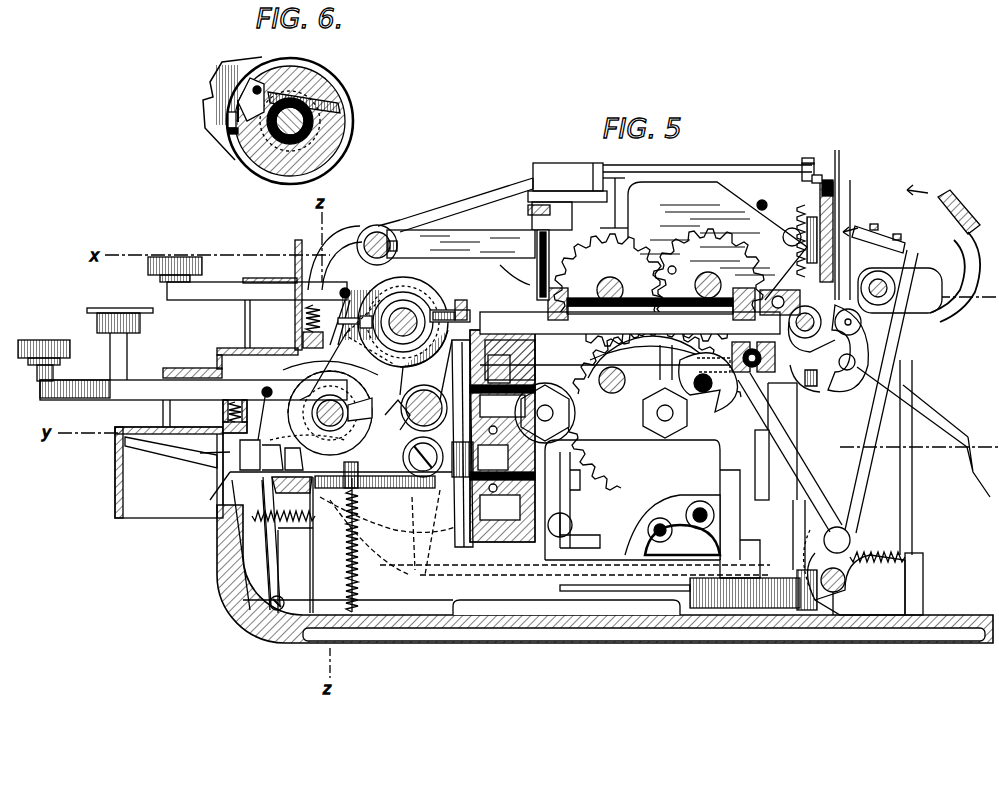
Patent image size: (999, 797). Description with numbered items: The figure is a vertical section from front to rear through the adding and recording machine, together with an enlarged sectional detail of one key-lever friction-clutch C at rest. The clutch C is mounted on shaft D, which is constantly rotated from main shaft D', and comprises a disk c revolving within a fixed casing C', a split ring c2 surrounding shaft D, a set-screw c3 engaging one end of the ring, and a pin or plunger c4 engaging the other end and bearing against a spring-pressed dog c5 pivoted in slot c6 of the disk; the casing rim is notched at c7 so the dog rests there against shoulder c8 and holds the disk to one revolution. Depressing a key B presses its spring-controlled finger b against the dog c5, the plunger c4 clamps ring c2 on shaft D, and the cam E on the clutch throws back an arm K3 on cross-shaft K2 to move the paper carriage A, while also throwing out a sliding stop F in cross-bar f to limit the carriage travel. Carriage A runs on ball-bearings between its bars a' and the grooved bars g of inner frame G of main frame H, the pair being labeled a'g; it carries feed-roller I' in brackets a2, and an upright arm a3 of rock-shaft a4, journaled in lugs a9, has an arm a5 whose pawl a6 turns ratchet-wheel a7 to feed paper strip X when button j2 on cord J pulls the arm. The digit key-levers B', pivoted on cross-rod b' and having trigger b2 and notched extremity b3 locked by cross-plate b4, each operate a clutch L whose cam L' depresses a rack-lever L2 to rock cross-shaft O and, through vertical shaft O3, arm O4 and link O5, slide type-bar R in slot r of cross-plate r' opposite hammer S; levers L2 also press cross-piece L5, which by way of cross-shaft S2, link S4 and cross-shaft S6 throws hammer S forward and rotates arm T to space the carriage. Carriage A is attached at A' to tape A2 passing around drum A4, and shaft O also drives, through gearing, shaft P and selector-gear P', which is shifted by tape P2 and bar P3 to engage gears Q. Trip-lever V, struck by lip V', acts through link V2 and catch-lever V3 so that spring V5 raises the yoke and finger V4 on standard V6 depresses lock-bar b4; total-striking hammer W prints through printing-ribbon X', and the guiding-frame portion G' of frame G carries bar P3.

In FIG. 6, the friction-clutch C is at (295, 117).
In FIG. 5, the friction-clutch C is at (410, 320).
In FIG. 6, the fixed casing C' is at (298, 119).
In FIG. 5, the fixed casing C' is at (405, 315).
In FIG. 5, the ring or disk c is at (408, 300).
In FIG. 6, the split ring c2 is at (318, 124).
In FIG. 6, the set-screw c3 is at (342, 104).
In FIG. 6, the pin or plunger c4 is at (268, 80).
In FIG. 6, the spring-pressed pawl or dog c5 is at (224, 116).
In FIG. 5, the spring-pressed pawl or dog c5 is at (323, 384).
In FIG. 6, the slot c6 is at (258, 76).
In FIG. 6, the notch or recess c7 is at (222, 128).
In FIG. 6, the shoulder c8 is at (228, 132).
In FIG. 6, the shaft D is at (264, 139).
In FIG. 5, the shaft D is at (401, 317).
In FIG. 5, the main shaft D' is at (330, 413).
In FIG. 5, the key B is at (175, 259).
In FIG. 5, the key-lever B' is at (44, 349).
In FIG. 5, the spring-controlled finger b is at (355, 325).
In FIG. 5, the cross-rod b' is at (262, 401).
In FIG. 5, the trigger or finger b2 is at (246, 455).
In FIG. 5, the notched extremity b3 is at (241, 542).
In FIG. 5, the pivoted cross-plate b4 is at (270, 457).
In FIG. 5, the friction-clutch member L is at (330, 384).
In FIG. 5, the cam L' is at (360, 411).
In FIG. 5, the rack-lever L2 is at (409, 457).
In FIG. 5, the cross-piece L5 is at (270, 490).
In FIG. 5, the cam E is at (347, 350).
In FIG. 5, the cross-shaft K2 is at (396, 414).
In FIG. 5, the upright arm K3 is at (398, 382).
In FIG. 5, the trip-lever V is at (424, 405).
In FIG. 5, the projecting lip V' is at (440, 370).
In FIG. 5, the link V2 is at (292, 545).
In FIG. 5, the pivoted lever V3 is at (261, 545).
In FIG. 5, the trip or finger V4 is at (292, 458).
In FIG. 5, the spring V5 is at (283, 510).
In FIG. 5, the standard V6 is at (316, 583).
In FIG. 5, the sliding stop F is at (465, 302).
In FIG. 5, the cross-bar f is at (461, 303).
In FIG. 5, the paper carrier or carriage A is at (483, 413).
In FIG. 5, the attachment point A' is at (503, 436).
In FIG. 5, the flexible steel tape A2 is at (510, 436).
In FIG. 5, the drum A4 is at (465, 500).
In FIG. 5, the main frame H is at (475, 204).
In FIG. 5, the cord or cable J is at (532, 236).
In FIG. 5, the button or engaging member j2 is at (528, 210).
In FIG. 5, the cross-shaft O is at (553, 413).
In FIG. 5, the vertical shaft O3 is at (548, 156).
In FIG. 5, the arm O4 is at (637, 155).
In FIG. 5, the connecting-link O5 is at (804, 162).
In FIG. 5, the inner frame G is at (612, 395).
In FIG. 5, the guiding-frame portion G' is at (654, 415).
In FIG. 5, the grooved bar g is at (708, 382).
In FIG. 5, the cross-shaft P is at (672, 413).
In FIG. 5, the selector-gear P' is at (642, 500).
In FIG. 5, the metallic tape P2 is at (575, 563).
In FIG. 5, the movable bar P3 is at (548, 528).
In FIG. 5, the carriage bar and grooved bar a'g is at (630, 311).
In FIG. 5, the bar a' is at (650, 366).
In FIG. 5, the bracket or extension a2 is at (858, 358).
In FIG. 5, the upright arm a3 is at (537, 272).
In FIG. 5, the rock-shaft a4 is at (610, 290).
In FIG. 5, the arm a5 is at (792, 241).
In FIG. 5, the spring-pressed pawl a6 is at (778, 308).
In FIG. 5, the ratchet-wheel a7 is at (820, 312).
In FIG. 5, the lug or ear a9 is at (665, 285).
In FIG. 5, the gear Q is at (800, 212).
In FIG. 5, the sliding type-bar R is at (835, 190).
In FIG. 5, the slot r is at (838, 172).
In FIG. 5, the cross-plate r' is at (815, 154).
In FIG. 5, the paper strip X is at (851, 221).
In FIG. 5, the printing-ribbon X' is at (838, 232).
In FIG. 5, the total-striking hammer W is at (888, 238).
In FIG. 5, the hammer S is at (950, 215).
In FIG. 5, the cross-shaft S2 is at (846, 583).
In FIG. 5, the link S4 is at (915, 516).
In FIG. 5, the cross-shaft S6 is at (877, 280).
In FIG. 5, the feed-roller I' is at (856, 348).
In FIG. 5, the arm T is at (790, 520).